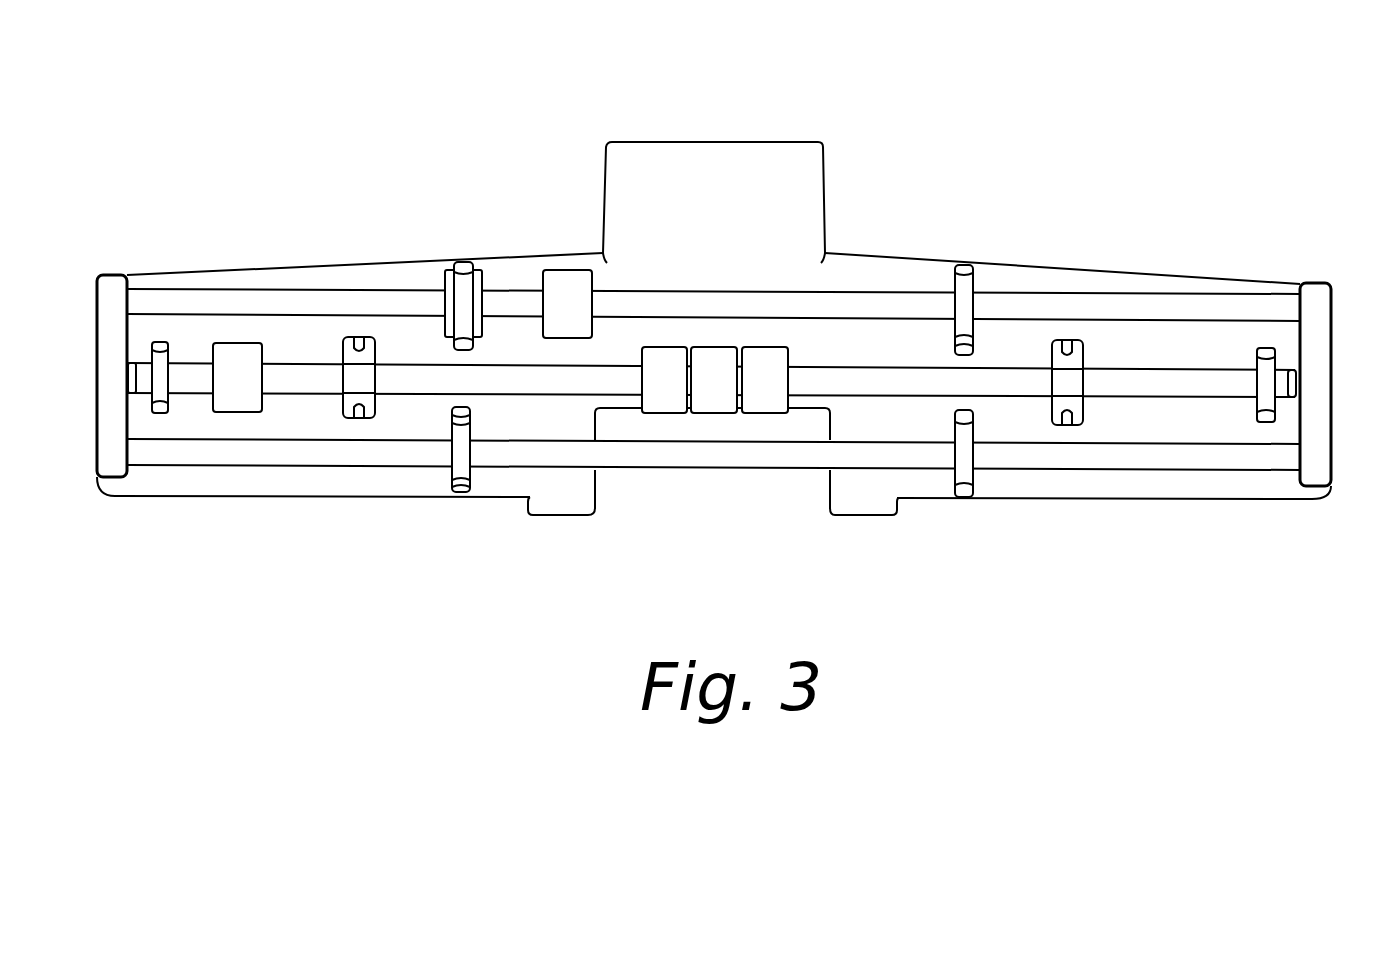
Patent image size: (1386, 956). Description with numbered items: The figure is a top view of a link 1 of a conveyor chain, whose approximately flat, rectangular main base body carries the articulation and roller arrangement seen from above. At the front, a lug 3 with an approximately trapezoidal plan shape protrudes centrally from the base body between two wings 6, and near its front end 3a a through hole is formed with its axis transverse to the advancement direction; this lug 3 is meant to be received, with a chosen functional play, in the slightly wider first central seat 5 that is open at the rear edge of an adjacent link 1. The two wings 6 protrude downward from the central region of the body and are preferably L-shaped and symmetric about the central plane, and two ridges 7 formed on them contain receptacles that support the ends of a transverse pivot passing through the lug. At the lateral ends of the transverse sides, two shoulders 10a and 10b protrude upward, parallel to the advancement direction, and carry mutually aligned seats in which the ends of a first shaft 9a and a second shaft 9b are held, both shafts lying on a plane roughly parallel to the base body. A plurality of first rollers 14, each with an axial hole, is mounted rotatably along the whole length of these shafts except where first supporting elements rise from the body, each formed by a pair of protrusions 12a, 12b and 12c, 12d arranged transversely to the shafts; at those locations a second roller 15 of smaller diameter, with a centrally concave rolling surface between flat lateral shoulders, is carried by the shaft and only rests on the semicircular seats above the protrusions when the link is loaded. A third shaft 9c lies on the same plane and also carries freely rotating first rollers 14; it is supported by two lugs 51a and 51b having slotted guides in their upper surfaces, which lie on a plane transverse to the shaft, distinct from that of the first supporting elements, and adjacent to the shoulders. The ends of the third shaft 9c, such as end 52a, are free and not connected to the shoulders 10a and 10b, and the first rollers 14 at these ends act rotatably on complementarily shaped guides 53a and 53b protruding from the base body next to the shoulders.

The link 1 is at (895, 134).
The lug 3 is at (662, 139).
The front end 3a is at (753, 142).
The first central seat 5 is at (735, 492).
The wings 6 is at (590, 521).
The ridges 7 is at (546, 518).
The first shaft 9a is at (200, 447).
The second shaft 9b is at (1162, 312).
The third shaft 9c is at (290, 375).
The shoulder 10a is at (1338, 396).
The shoulder 10b is at (90, 330).
The protrusion 12a is at (963, 263).
The protrusion 12b is at (965, 500).
The protrusion 12c is at (462, 260).
The protrusion 12d is at (460, 495).
The first rollers 14 is at (571, 287).
The second roller 15 is at (455, 302).
The lug 51a is at (1066, 427).
The lug 51b is at (358, 420).
The end 52a is at (140, 400).
The guide 53a is at (1267, 427).
The guide 53b is at (163, 339).